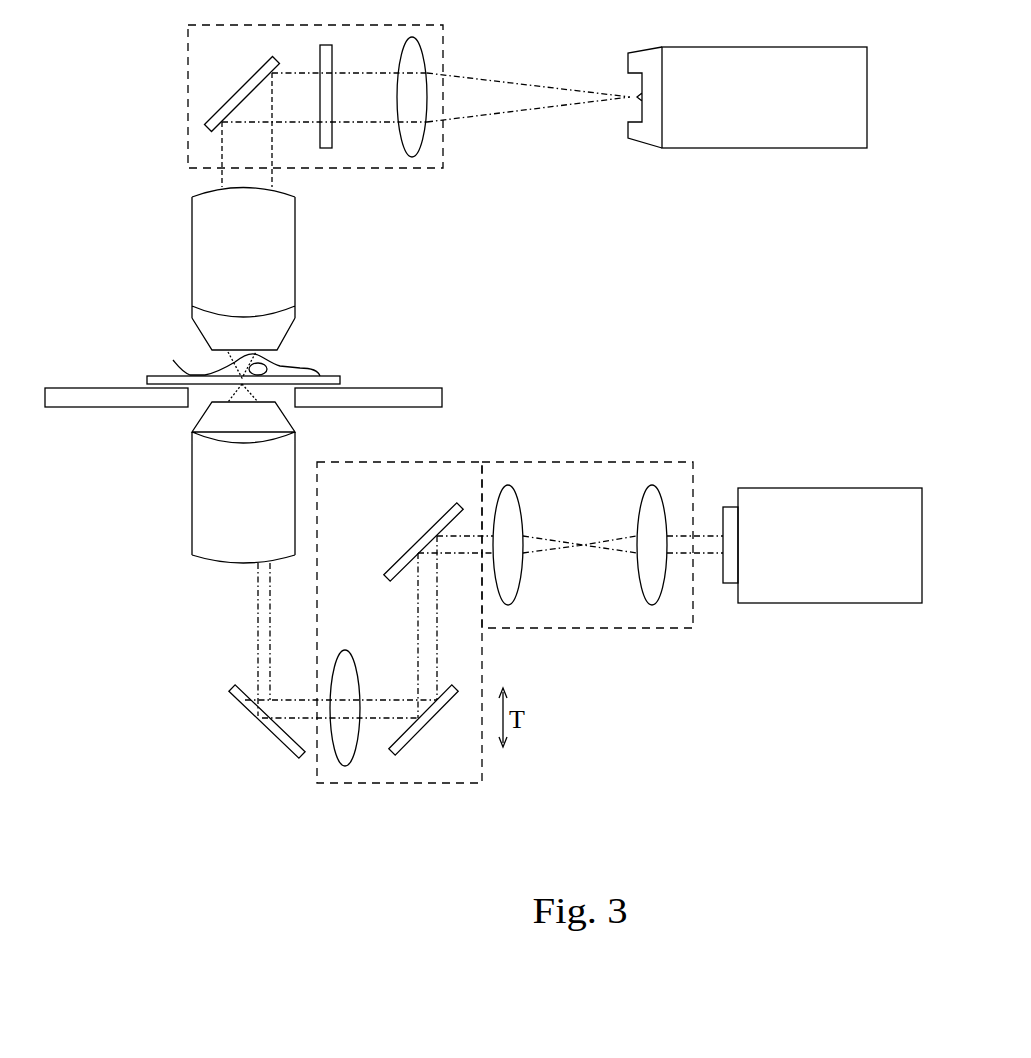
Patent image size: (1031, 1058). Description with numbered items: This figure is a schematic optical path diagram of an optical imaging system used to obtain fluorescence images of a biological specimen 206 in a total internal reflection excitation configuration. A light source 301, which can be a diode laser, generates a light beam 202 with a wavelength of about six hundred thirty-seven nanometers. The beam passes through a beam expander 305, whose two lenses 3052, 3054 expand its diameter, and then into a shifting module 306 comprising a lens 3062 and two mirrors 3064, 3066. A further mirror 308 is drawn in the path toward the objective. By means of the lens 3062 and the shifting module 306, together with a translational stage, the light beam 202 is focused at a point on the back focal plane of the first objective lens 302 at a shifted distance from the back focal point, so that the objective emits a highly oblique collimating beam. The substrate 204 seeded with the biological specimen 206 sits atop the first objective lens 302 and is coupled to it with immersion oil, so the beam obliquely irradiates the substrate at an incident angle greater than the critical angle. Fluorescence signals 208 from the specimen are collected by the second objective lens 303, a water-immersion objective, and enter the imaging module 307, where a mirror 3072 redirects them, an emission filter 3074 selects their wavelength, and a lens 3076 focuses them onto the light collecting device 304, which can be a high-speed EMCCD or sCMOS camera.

The light source 301 is at (913, 545).
The first objective lens 302 is at (205, 490).
The second objective lens 303 is at (207, 233).
The light collecting device 304 is at (867, 98).
The beam expander 305 is at (693, 462).
The shifting module 306 is at (482, 765).
The imaging module 307 is at (443, 45).
The reflector 308 is at (240, 698).
The light beam 202 is at (258, 612).
The substrate 204 is at (147, 383).
The biological specimen 206 is at (192, 372).
The fluorescence signals 208 is at (502, 108).
The lens 3052 is at (652, 490).
The lens 3054 is at (508, 490).
The lens 3062 is at (345, 753).
The mirror 3064 is at (412, 550).
The mirror 3066 is at (427, 728).
The mirror 3072 is at (237, 98).
The emission filter 3074 is at (327, 148).
The lens 3076 is at (412, 157).